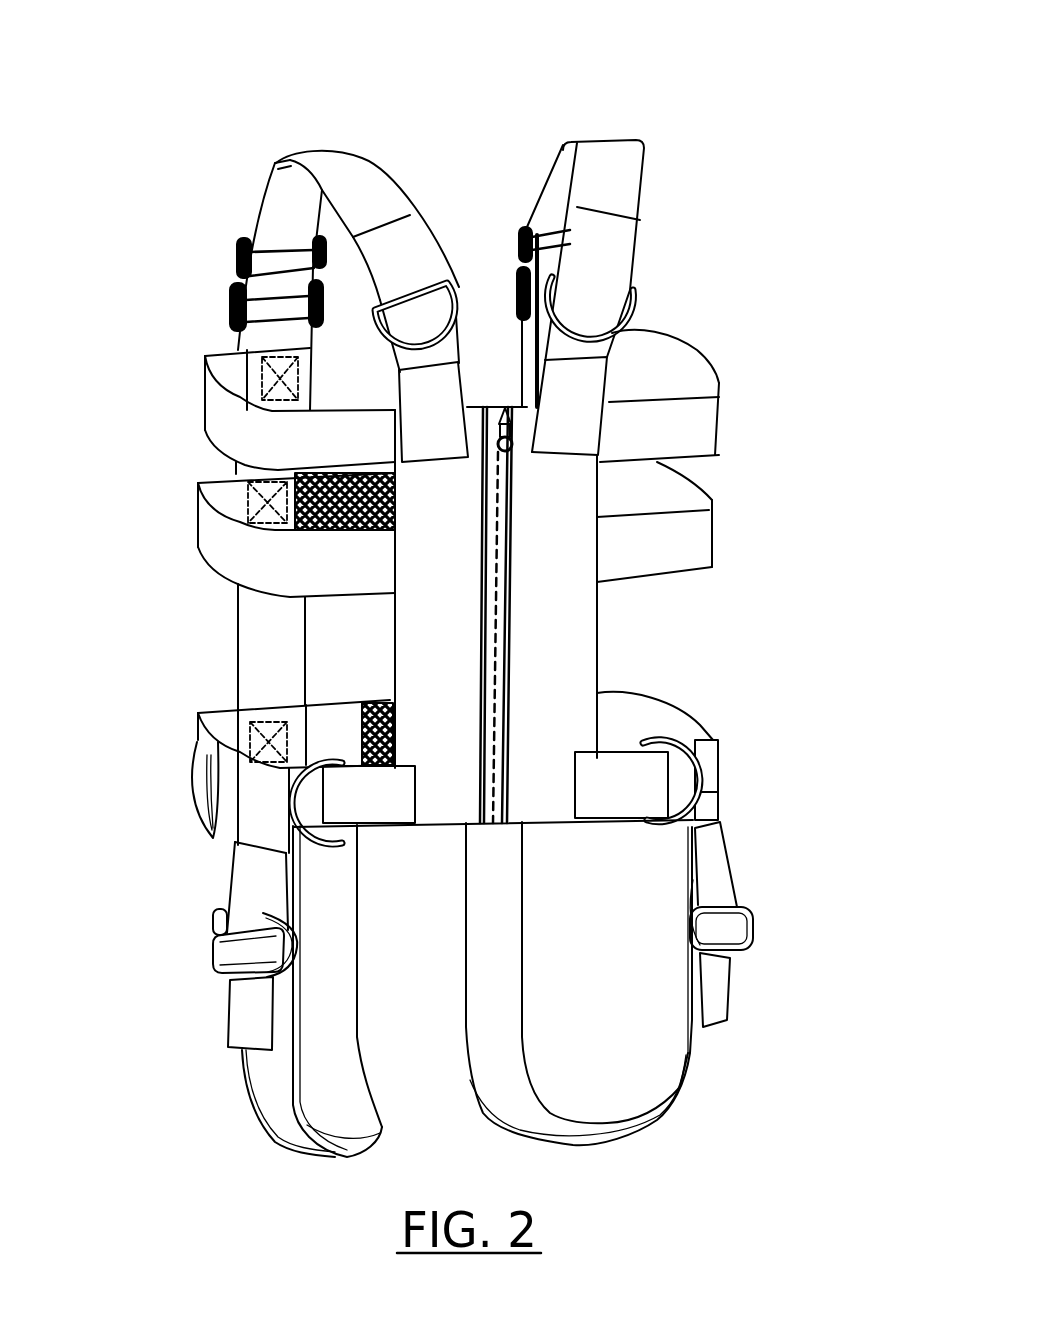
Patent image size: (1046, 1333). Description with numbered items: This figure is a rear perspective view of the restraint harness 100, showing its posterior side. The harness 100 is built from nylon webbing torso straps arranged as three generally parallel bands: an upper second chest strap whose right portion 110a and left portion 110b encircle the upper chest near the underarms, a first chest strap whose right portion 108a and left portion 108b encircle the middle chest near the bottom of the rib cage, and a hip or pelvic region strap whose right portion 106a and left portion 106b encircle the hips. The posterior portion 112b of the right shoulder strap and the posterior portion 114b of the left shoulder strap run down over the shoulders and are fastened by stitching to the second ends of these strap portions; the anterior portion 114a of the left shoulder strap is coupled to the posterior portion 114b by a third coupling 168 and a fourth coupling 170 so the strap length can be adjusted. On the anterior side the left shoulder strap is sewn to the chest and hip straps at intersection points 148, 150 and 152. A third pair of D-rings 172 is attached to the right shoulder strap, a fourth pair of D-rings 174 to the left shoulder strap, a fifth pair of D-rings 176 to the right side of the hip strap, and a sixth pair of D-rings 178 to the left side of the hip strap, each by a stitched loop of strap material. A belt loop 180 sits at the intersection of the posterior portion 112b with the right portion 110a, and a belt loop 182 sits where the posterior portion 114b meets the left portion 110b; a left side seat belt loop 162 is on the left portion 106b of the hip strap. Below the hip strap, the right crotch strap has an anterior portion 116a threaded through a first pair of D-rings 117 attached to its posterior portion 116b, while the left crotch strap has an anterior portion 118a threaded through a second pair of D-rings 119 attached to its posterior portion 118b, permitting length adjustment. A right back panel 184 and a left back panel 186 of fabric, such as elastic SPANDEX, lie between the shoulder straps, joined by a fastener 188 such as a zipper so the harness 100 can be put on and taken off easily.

The harness 100 is at (312, 38).
The right portion of the hip or pelvic region strap 106a is at (727, 690).
The left portion of the hip or pelvic region strap 106b is at (252, 701).
The right portion of the first chest strap 108a is at (713, 533).
The left portion of the first chest strap 108b is at (253, 514).
The right portion of the second chest strap 110a is at (719, 420).
The left portion of the second chest strap 110b is at (255, 395).
The posterior portion of the right shoulder strap 112b is at (655, 180).
The anterior portion of the left shoulder strap 114a is at (237, 637).
The posterior portion of the left shoulder strap 114b is at (393, 178).
The anterior portion of the right crotch strap 116a is at (690, 1063).
The posterior portion of the right crotch strap 116b is at (723, 860).
The first pair of D-rings 117 is at (697, 917).
The anterior portion of the left crotch strap 118a is at (360, 1050).
The posterior portion of the left crotch strap 118b is at (233, 863).
The second pair of D-rings 119 is at (217, 927).
The intersection point 148 is at (262, 377).
The intersection point 150 is at (247, 500).
The intersection point 152 is at (247, 737).
The left side seat belt loop 162 is at (187, 790).
The third coupling 168 is at (240, 257).
The fourth coupling 170 is at (235, 313).
The third pair of D-rings 172 is at (640, 293).
The fourth pair of D-rings 174 is at (460, 278).
The fifth pair of D-rings 176 is at (717, 793).
The sixth pair of D-rings 178 is at (330, 847).
The belt loop 180 is at (601, 429).
The belt loop 182 is at (456, 430).
The right back panel 184 is at (597, 650).
The left back panel 186 is at (388, 667).
The fastener 188 is at (493, 833).